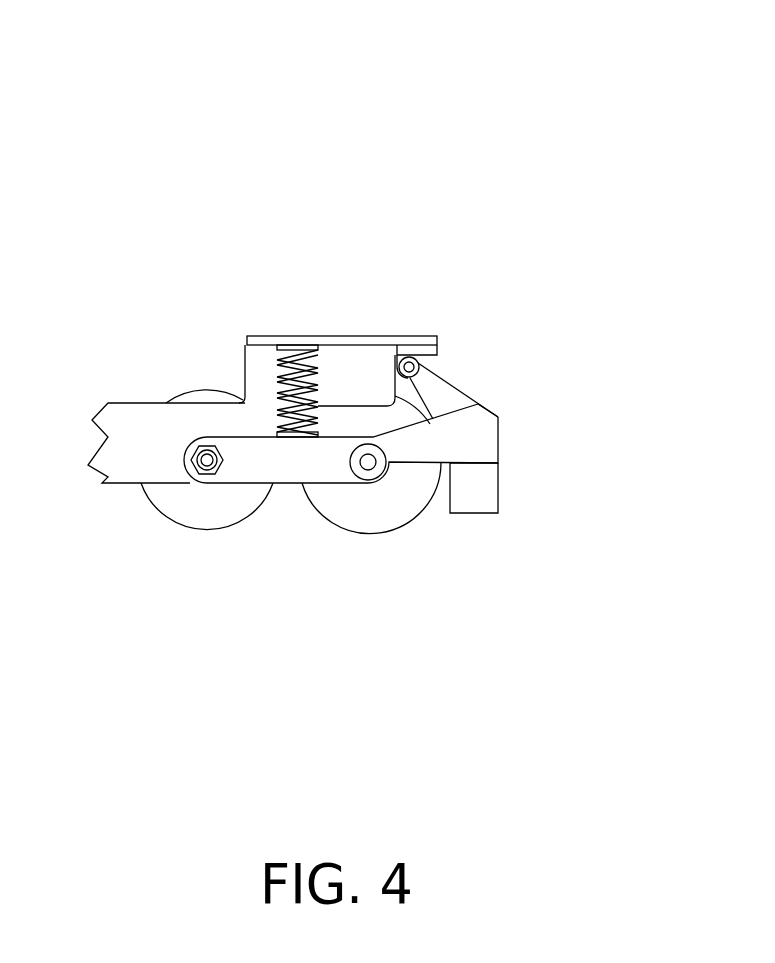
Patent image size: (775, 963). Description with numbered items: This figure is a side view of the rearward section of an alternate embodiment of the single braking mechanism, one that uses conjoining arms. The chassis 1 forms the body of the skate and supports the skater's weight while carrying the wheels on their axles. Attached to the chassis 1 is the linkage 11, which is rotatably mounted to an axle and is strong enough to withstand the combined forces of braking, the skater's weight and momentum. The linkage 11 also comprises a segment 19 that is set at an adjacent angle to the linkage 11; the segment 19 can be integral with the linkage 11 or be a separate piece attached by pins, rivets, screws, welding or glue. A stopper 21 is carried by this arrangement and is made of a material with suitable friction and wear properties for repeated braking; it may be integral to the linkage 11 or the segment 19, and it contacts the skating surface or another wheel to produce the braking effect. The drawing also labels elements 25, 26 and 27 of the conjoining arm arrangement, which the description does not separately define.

The chassis 1 is at (145, 455).
The linkage 11 is at (477, 429).
The segment 19 is at (462, 393).
The stopper 21 is at (475, 493).
The pivot bar 25 is at (275, 467).
The pivot nut 26 is at (207, 468).
The spring 27 is at (292, 372).